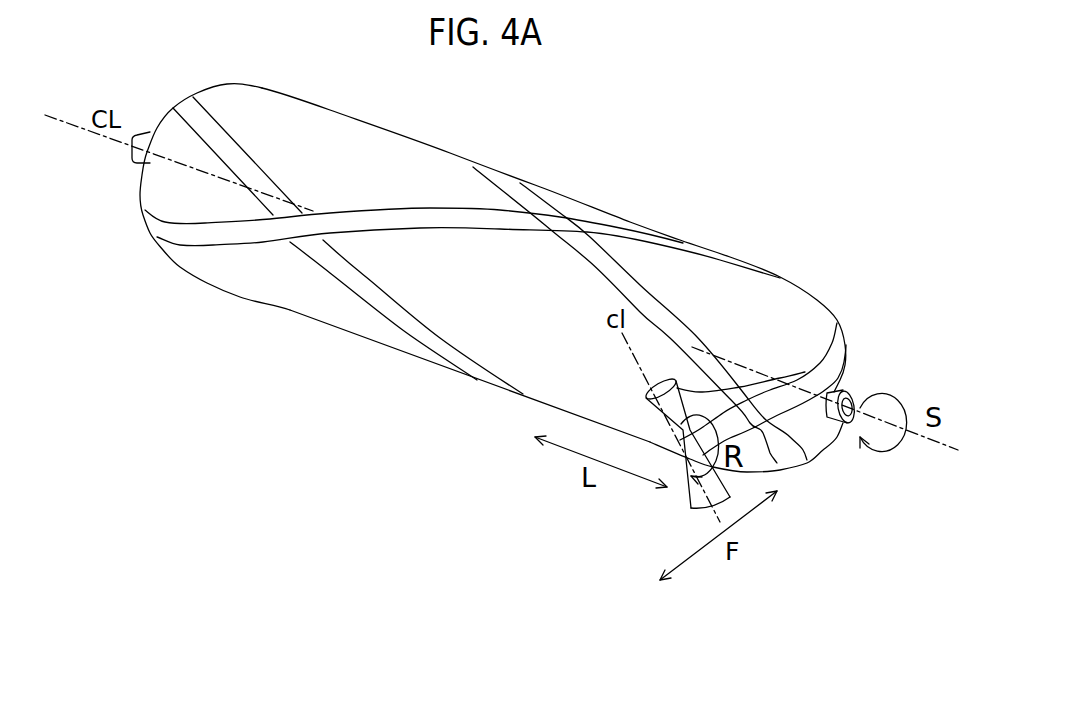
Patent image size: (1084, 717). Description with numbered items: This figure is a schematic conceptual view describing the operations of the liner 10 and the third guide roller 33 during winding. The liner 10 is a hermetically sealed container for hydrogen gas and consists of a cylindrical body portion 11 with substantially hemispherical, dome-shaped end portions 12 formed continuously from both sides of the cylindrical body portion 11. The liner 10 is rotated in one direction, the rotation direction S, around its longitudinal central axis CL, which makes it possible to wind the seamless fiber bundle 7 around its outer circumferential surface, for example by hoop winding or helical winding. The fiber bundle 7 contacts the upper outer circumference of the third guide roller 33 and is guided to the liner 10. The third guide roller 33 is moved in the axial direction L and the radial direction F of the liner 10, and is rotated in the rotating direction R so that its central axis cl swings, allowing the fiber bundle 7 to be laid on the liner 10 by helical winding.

The fiber bundle 7 is at (835, 322).
The liner 10 is at (400, 150).
The cylindrical body portion 11 is at (383, 337).
The end portion 12 is at (150, 195).
The third guide roller 33 is at (642, 386).